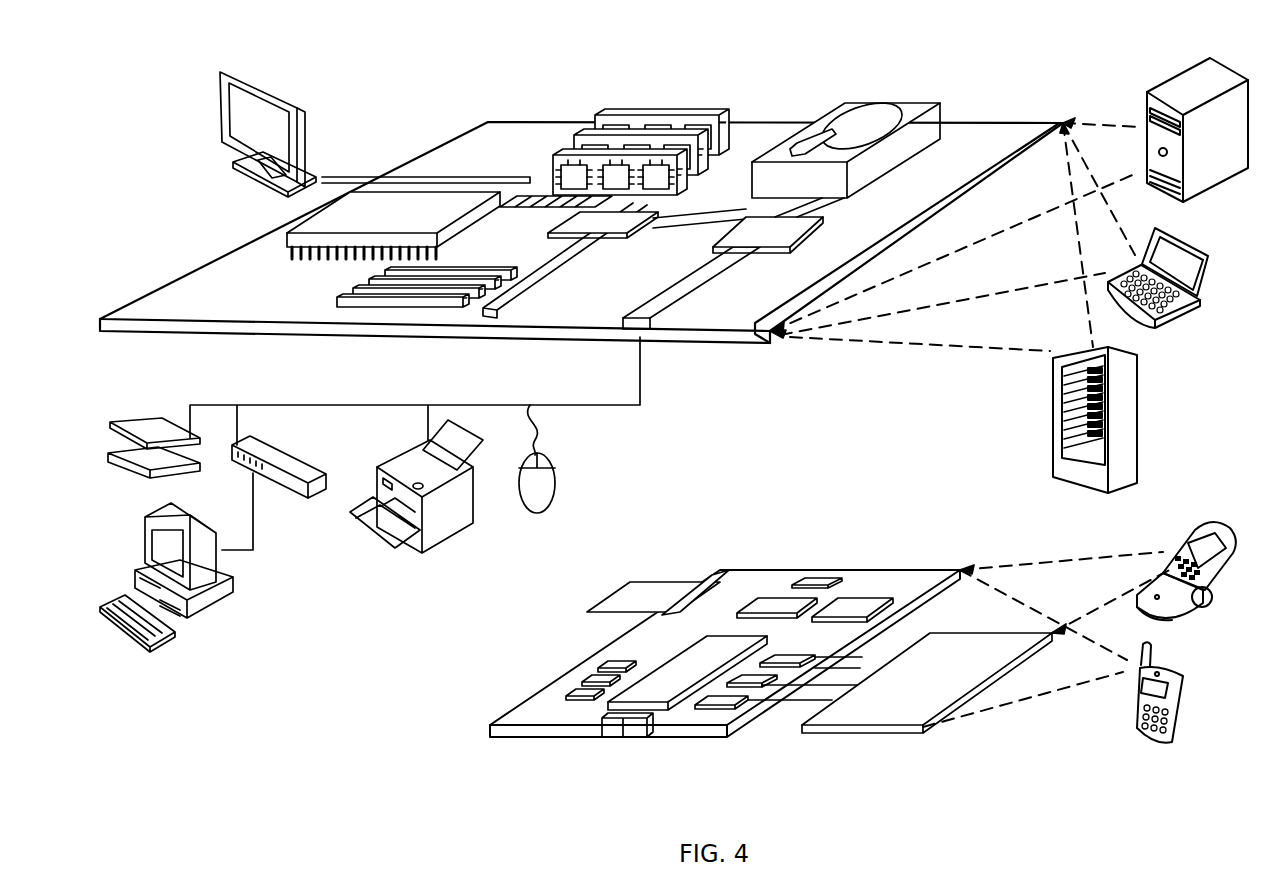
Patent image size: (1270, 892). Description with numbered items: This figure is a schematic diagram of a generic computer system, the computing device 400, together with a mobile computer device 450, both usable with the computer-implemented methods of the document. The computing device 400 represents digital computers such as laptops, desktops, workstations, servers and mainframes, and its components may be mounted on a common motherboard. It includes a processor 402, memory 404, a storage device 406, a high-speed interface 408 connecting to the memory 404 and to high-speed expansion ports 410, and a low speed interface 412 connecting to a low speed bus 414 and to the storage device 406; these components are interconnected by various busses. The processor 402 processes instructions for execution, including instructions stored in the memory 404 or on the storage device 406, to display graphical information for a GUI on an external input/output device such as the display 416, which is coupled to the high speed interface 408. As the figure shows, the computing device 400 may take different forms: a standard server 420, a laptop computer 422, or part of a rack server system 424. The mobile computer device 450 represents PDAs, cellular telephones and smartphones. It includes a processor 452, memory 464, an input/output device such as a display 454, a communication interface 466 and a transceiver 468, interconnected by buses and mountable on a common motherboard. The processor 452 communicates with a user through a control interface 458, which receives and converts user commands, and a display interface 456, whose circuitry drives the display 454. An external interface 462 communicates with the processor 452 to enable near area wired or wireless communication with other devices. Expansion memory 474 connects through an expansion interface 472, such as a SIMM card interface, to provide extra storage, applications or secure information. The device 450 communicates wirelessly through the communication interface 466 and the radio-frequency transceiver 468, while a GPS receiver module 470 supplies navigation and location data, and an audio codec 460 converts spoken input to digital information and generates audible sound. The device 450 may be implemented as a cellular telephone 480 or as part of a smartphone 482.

The computing device 400 is at (410, 100).
The processor 402 is at (258, 243).
The memory 404 is at (616, 116).
The storage device 406 is at (832, 101).
The high-speed interface 408 is at (580, 224).
The high-speed expansion ports 410 is at (357, 293).
The low speed interface 412 is at (750, 228).
The low speed bus 414 is at (645, 334).
The display 416 is at (220, 70).
The standard server 420 is at (1140, 103).
The laptop computer 422 is at (1212, 252).
The rack server system 424 is at (1053, 427).
The mobile computer device 450 is at (465, 735).
The processor 452 is at (662, 700).
The display 454 is at (890, 712).
The display interface 456 is at (722, 706).
The control interface 458 is at (775, 690).
The audio codec 460 is at (802, 668).
The external interface 462 is at (625, 727).
The memory 464 is at (578, 688).
The communication interface 466 is at (778, 607).
The transceiver 468 is at (851, 607).
The GPS receiver module 470 is at (827, 575).
The expansion interface 472 is at (707, 580).
The expansion memory 474 is at (623, 580).
The cellular telephone 480 is at (1198, 527).
The smartphone 482 is at (1133, 697).